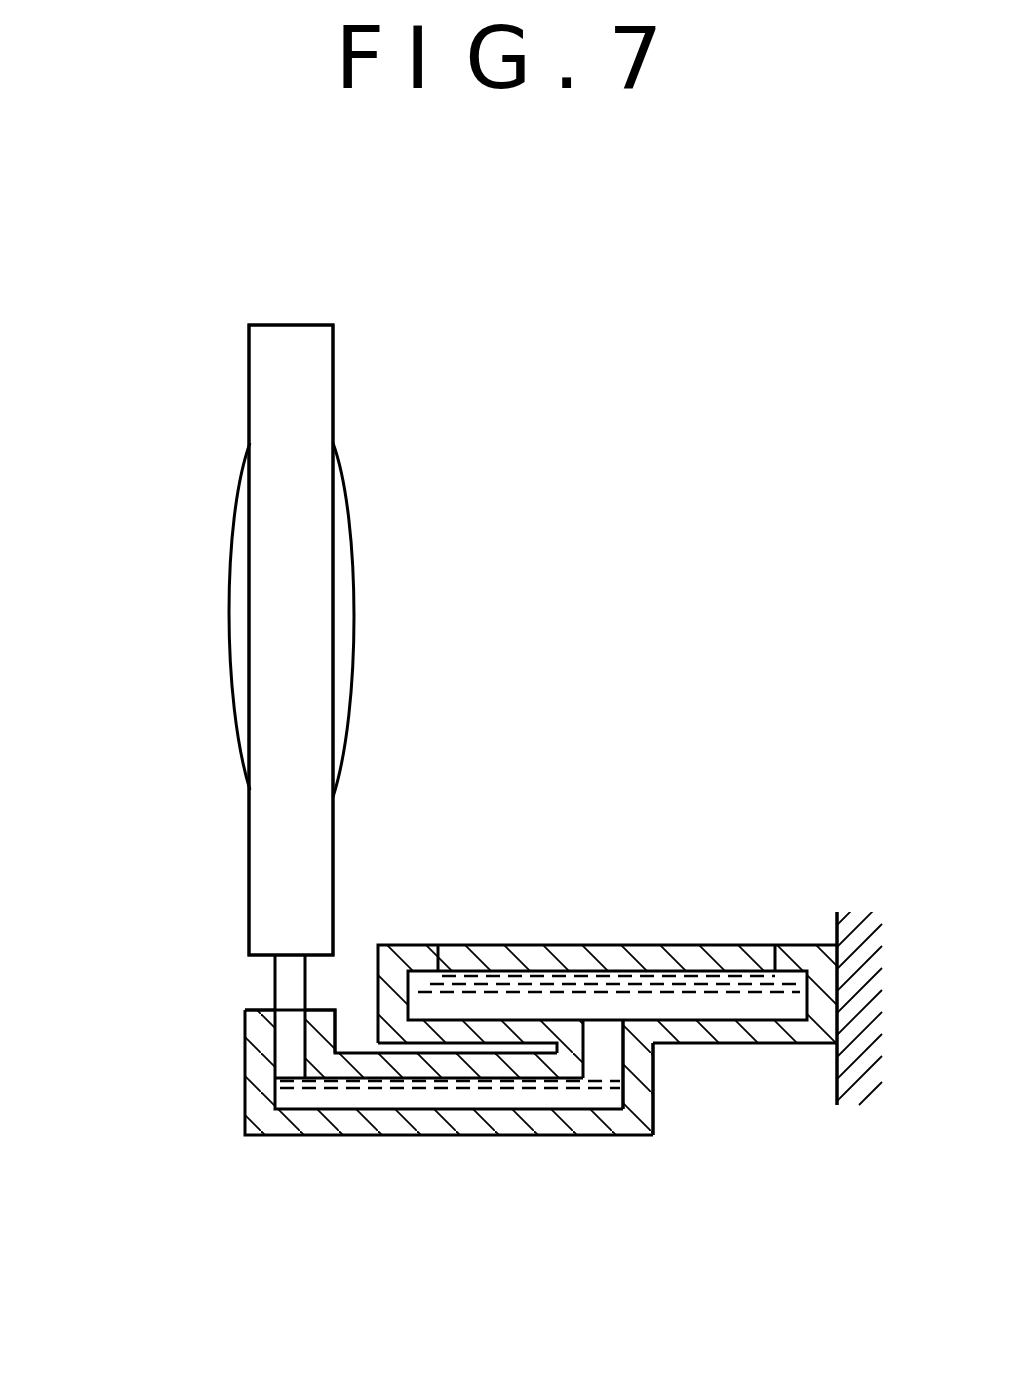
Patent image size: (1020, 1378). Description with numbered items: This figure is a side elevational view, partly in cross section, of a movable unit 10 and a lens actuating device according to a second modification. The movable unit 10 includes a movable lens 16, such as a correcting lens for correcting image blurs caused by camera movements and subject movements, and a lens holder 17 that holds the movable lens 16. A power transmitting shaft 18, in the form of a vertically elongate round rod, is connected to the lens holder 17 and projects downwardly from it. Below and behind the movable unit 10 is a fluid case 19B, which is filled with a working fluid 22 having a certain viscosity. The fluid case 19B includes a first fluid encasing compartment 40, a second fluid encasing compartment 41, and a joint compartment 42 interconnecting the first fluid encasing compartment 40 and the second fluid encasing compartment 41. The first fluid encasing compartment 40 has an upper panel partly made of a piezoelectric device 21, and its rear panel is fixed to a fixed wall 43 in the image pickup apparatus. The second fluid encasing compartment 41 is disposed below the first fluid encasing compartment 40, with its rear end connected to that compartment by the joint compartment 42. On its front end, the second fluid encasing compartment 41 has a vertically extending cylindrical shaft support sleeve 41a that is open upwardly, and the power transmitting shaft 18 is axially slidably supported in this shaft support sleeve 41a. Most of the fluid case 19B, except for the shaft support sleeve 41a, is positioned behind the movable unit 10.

The movable unit 10 is at (328, 348).
The movable lens 16 is at (351, 560).
The lens holder 17 is at (331, 445).
The power transmitting shaft 18 is at (273, 982).
The fluid case 19B is at (800, 945).
The piezoelectric device 21 is at (725, 945).
The working fluid 22 is at (570, 997).
The first fluid encasing compartment 40 is at (742, 1037).
The second fluid encasing compartment 41 is at (425, 1127).
The shaft support sleeve 41a is at (243, 1035).
The joint compartment 42 is at (647, 1053).
The fixed wall 43 is at (835, 1082).